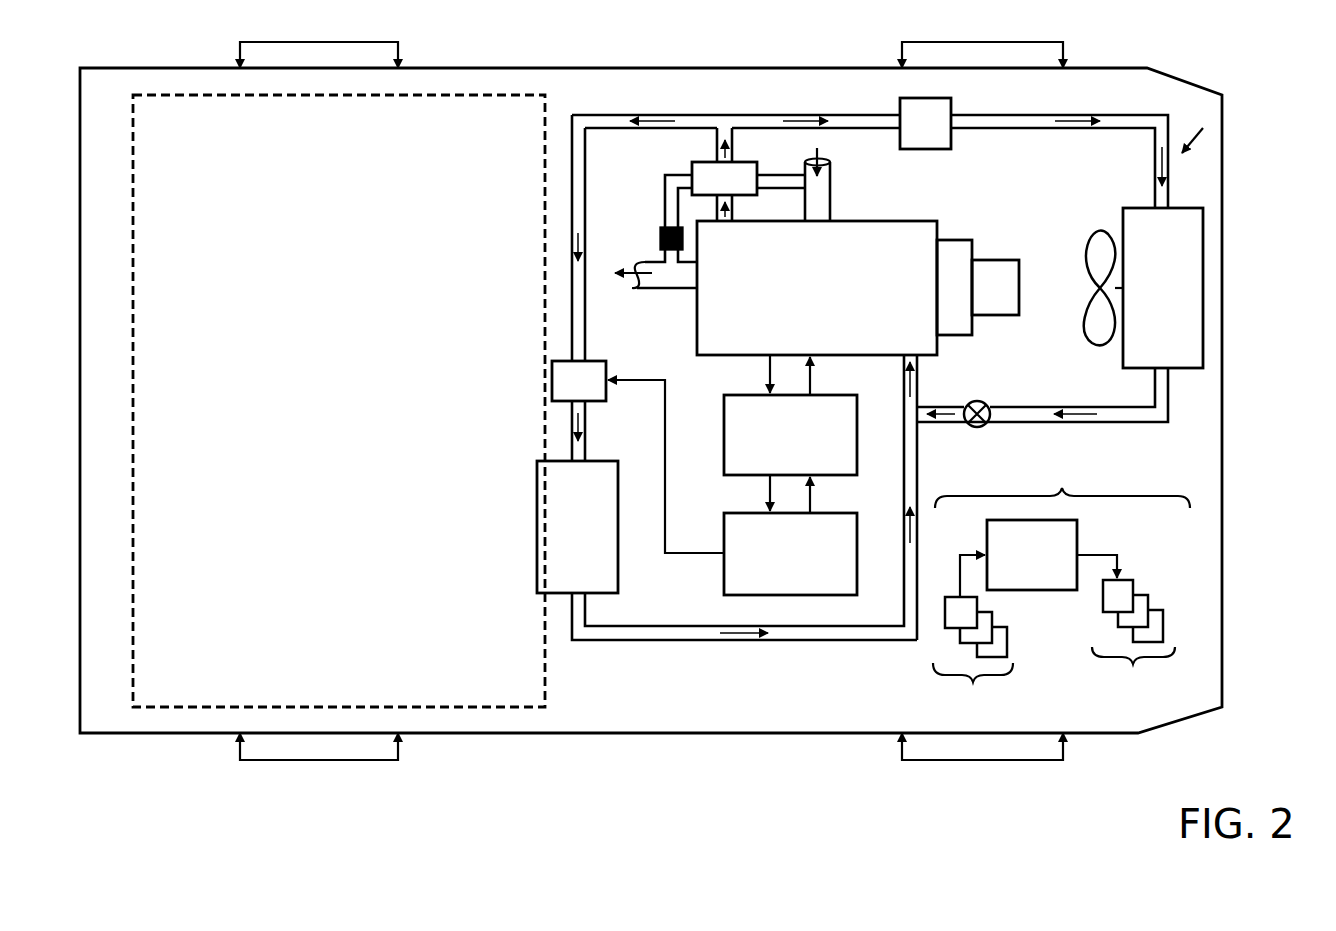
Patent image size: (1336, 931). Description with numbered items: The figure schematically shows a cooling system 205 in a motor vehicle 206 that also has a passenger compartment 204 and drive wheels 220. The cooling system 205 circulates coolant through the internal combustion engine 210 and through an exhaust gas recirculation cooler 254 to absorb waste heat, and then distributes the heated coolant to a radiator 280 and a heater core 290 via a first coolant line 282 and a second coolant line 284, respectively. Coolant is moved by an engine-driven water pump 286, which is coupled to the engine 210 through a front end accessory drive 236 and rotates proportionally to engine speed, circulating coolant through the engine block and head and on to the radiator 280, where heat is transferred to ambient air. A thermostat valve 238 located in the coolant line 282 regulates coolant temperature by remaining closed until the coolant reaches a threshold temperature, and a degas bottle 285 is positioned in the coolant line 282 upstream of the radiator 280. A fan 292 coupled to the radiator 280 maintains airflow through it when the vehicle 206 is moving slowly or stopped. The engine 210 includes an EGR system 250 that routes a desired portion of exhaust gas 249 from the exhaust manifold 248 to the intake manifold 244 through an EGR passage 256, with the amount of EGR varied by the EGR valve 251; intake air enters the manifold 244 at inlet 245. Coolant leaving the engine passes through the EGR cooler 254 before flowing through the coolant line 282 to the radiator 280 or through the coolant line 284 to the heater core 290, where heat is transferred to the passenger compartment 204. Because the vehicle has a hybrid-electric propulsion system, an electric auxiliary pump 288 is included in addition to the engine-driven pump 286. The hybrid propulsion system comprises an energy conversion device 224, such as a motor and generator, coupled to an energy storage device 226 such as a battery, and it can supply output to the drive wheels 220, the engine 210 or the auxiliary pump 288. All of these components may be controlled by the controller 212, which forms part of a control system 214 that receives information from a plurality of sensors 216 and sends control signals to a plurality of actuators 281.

The passenger compartment 204 is at (278, 441).
The cooling system 205 is at (1202, 129).
The motor vehicle 206 is at (583, 67).
The internal combustion engine 210 is at (926, 259).
The controller 212 is at (1015, 567).
The control system 214 is at (1062, 475).
The sensors 216 is at (973, 640).
The drive wheels 220 is at (322, 42).
The energy conversion device 224 is at (773, 445).
The energy storage device 226 is at (773, 565).
The front end accessory drive 236 is at (955, 240).
The thermostat valve 238 is at (978, 402).
The intake manifold 244 is at (833, 202).
The intake air 245 is at (819, 154).
The exhaust manifold 248 is at (678, 287).
The exhaust gas 249 is at (636, 284).
The exhaust gas recirculation system 250 is at (648, 181).
The EGR valve 251 is at (660, 238).
The EGR cooler 254 is at (708, 190).
The EGR passage 256 is at (765, 175).
The radiator 280 is at (1146, 299).
The actuators 281 is at (1133, 631).
The coolant line 282 is at (987, 112).
The coolant line 284 is at (652, 113).
The degas bottle 285 is at (908, 134).
The engine-driven water pump 286 is at (978, 299).
The electric auxiliary pump 288 is at (562, 393).
The heater core 290 is at (561, 539).
The fan 292 is at (1085, 252).